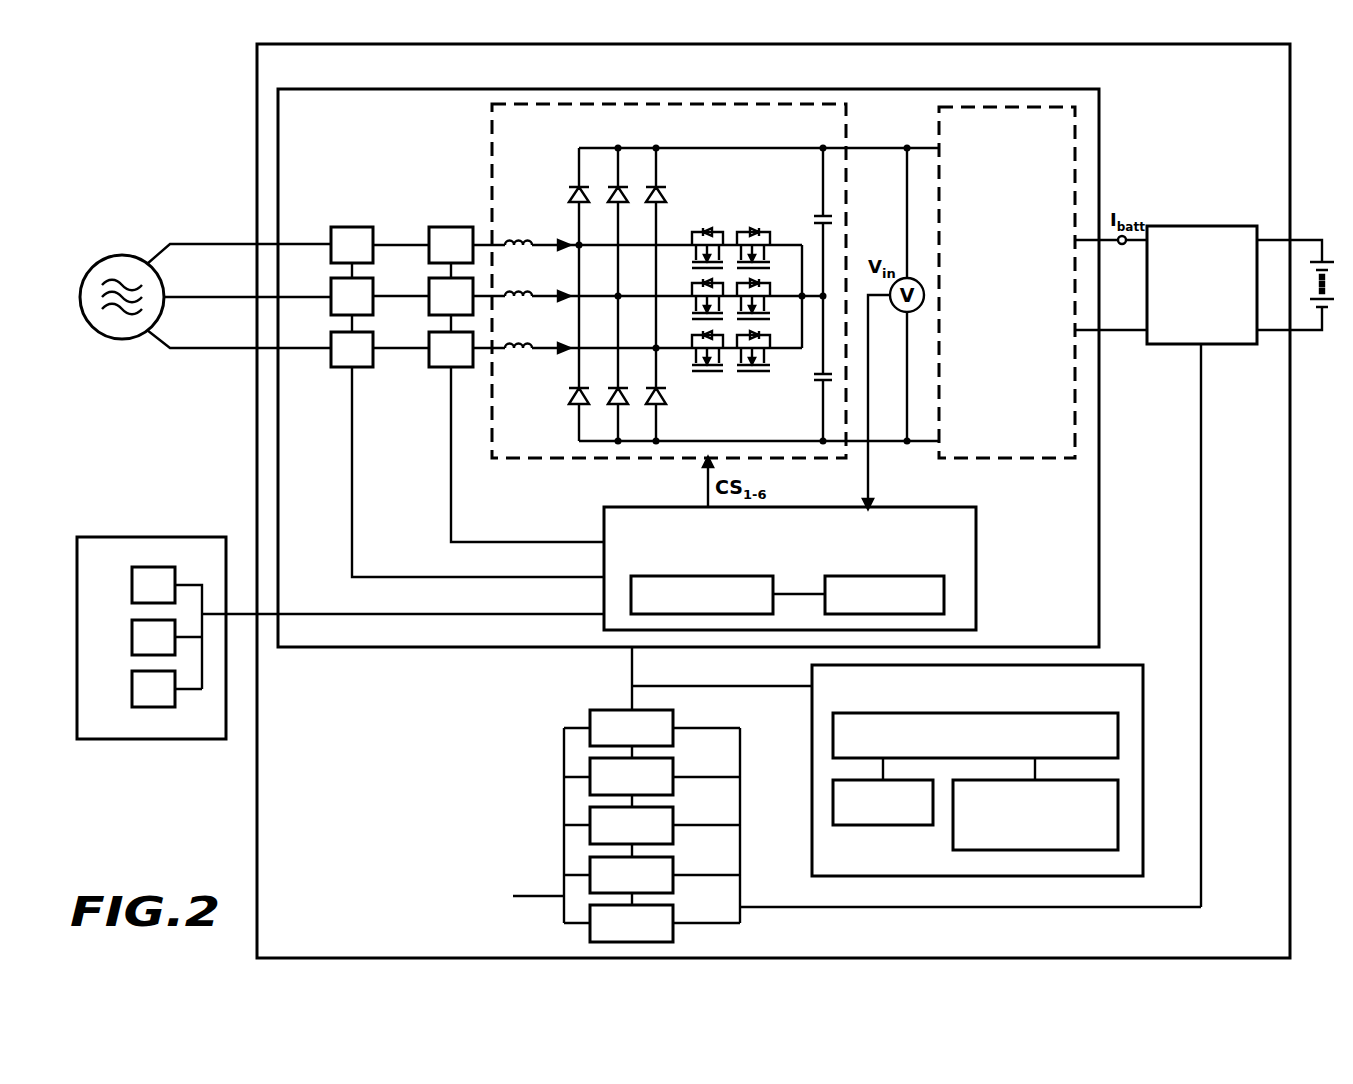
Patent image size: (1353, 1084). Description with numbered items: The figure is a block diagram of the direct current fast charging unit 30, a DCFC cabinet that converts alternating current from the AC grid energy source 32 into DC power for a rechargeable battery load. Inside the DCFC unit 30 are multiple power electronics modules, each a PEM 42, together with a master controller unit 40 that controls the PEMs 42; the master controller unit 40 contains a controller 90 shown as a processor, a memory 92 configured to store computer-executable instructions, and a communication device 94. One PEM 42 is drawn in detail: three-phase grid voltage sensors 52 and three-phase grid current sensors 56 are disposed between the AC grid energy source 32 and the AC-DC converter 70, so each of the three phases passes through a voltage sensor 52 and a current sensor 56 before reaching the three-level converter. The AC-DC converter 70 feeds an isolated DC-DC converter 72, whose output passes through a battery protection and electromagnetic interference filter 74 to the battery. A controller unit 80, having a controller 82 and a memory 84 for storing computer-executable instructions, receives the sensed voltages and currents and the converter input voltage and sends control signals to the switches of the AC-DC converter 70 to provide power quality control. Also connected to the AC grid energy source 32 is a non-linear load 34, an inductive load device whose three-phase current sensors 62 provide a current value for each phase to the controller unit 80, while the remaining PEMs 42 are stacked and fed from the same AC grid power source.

The direct current fast charging (DCFC) unit 30 is at (257, 70).
The power electronics module (PEM) 42 is at (278, 116).
The AC grid energy source 32 is at (122, 258).
The three-phase grid voltage sensors 52 is at (331, 338).
The three-phase grid current sensors 56 is at (429, 338).
The AC-DC converter 70 is at (492, 128).
The DC-DC converter 72 is at (939, 132).
The battery protection & electromagnetic interference (EMI) filter 74 is at (1203, 226).
The controller unit 80 is at (650, 507).
The controller 82 is at (735, 576).
The memory 84 is at (916, 576).
The non-linear load 34 is at (120, 537).
The three-phase current sensors 62 is at (132, 689).
The master controller unit 40 is at (1064, 699).
The controller 90 is at (1069, 747).
The memory 92 is at (862, 825).
The communication device 94 is at (953, 838).